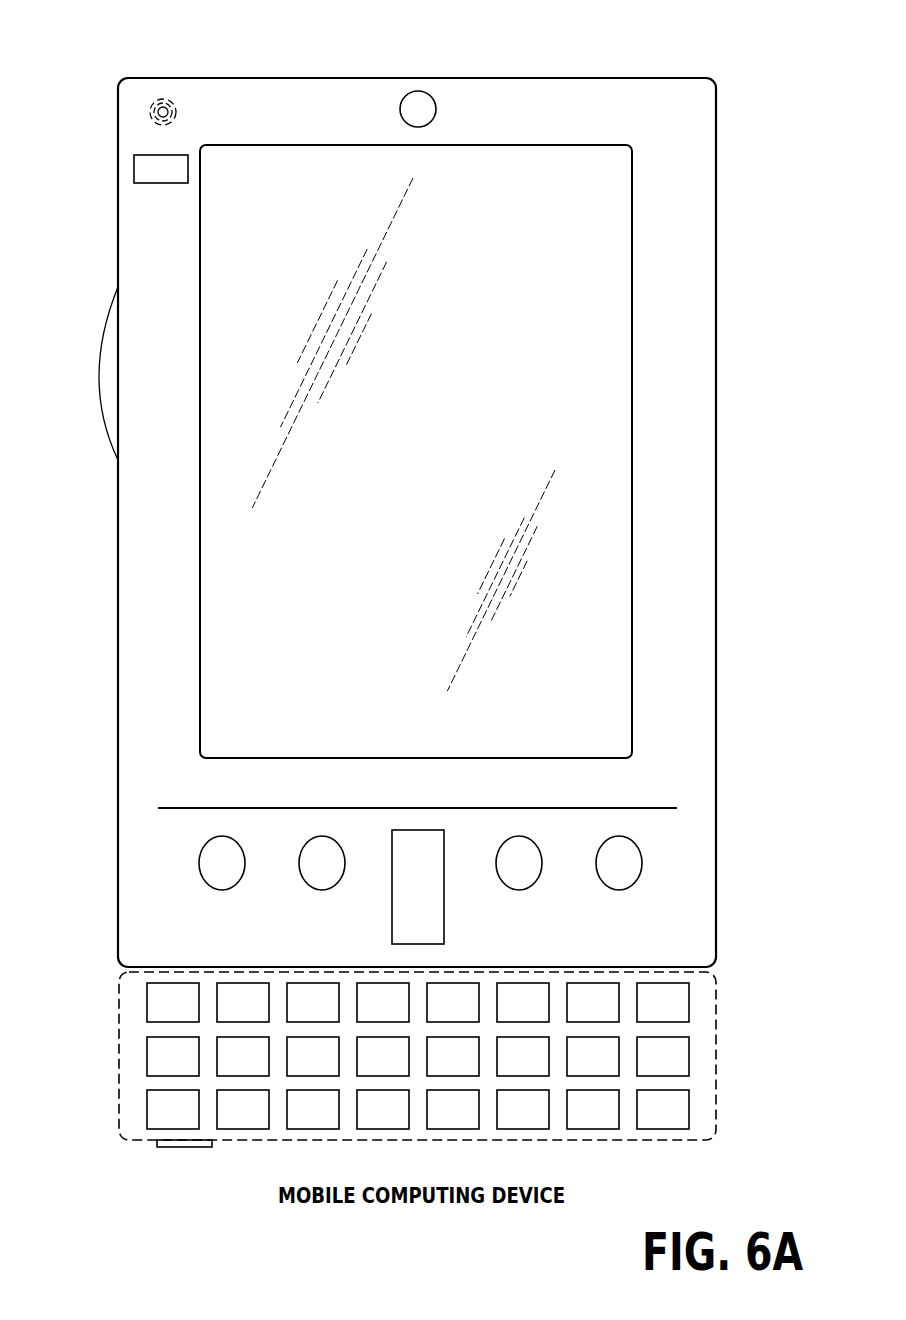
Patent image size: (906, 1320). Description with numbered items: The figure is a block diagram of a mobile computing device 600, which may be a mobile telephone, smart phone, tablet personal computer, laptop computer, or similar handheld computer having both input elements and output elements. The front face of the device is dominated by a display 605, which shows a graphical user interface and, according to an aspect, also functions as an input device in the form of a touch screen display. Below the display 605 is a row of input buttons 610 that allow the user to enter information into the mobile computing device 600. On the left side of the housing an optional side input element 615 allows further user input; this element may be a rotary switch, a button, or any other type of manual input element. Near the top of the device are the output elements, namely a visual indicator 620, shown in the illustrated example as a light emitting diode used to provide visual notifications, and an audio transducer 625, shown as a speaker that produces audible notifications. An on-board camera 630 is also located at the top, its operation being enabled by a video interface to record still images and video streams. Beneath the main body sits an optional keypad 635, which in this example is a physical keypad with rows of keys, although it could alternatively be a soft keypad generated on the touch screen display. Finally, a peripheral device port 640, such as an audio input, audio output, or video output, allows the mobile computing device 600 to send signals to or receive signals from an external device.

The mobile computing device 600 is at (683, 77).
The display 605 is at (218, 598).
The input buttons 610 is at (222, 891).
The side input element 615 is at (97, 375).
The visual indicator 620 is at (134, 167).
The audio transducer 625 is at (138, 113).
The on-board camera 630 is at (418, 91).
The keypad 635 is at (126, 1055).
The peripheral device port 640 is at (165, 1147).